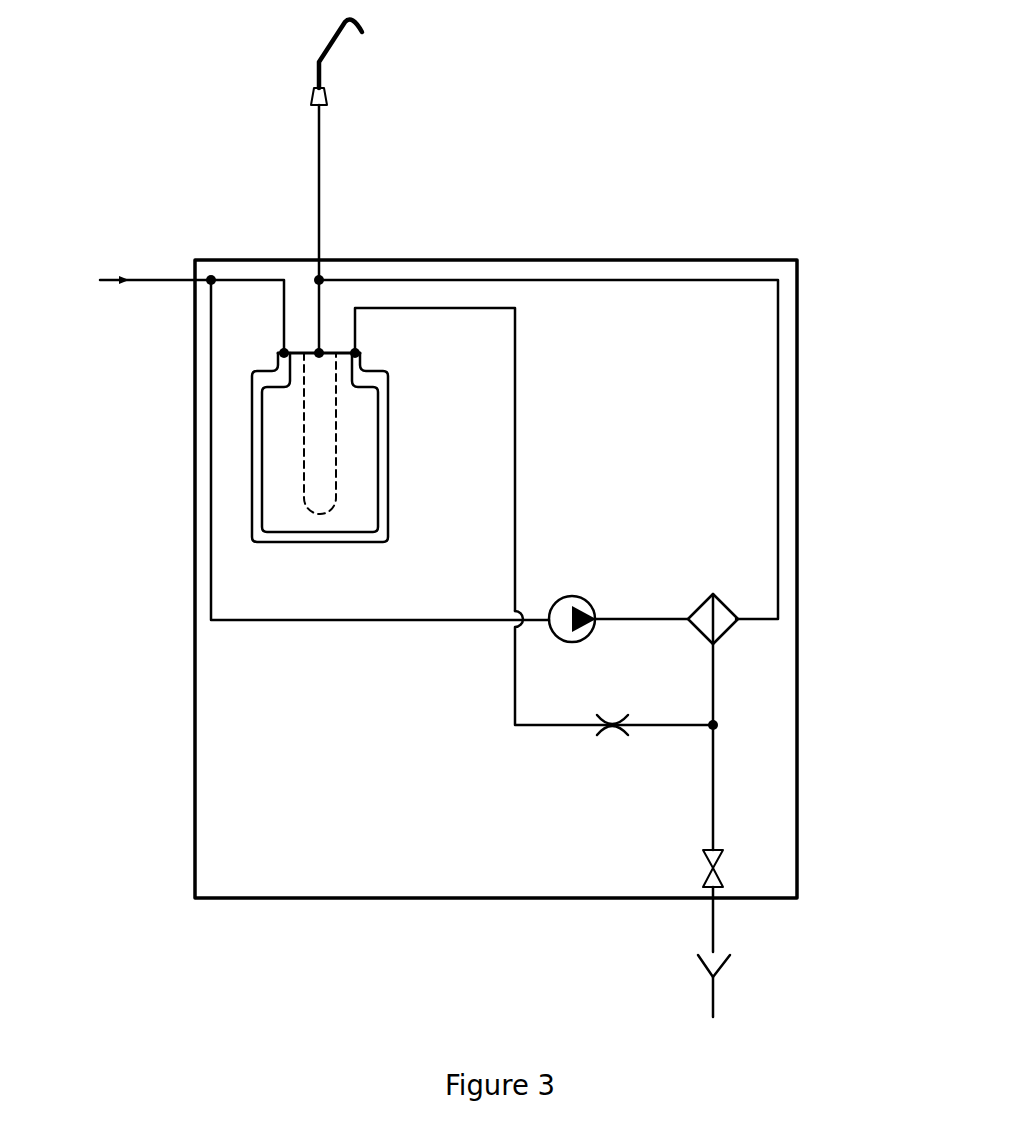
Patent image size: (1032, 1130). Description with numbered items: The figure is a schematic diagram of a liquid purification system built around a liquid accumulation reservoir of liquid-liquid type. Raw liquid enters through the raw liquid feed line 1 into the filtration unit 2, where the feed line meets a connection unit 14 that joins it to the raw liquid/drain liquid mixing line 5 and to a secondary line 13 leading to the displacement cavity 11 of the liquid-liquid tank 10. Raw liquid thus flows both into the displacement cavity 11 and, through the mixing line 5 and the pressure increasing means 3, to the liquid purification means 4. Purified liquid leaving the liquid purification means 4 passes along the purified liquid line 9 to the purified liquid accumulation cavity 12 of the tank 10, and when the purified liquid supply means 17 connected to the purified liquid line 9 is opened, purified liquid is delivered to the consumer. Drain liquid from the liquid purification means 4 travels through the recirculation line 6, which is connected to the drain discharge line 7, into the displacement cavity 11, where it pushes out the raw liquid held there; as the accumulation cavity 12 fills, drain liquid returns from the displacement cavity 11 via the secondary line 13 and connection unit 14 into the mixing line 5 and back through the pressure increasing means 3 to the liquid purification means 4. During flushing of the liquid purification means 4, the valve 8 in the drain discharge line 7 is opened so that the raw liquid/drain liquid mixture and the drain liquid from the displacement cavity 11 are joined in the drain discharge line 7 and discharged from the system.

The raw liquid feed line 1 is at (154, 207).
The filtration unit 2 is at (496, 579).
The pressure increasing means 3 is at (618, 567).
The liquid purification means 4 is at (719, 568).
The raw liquid/drain liquid mixing line 5 is at (403, 622).
The recirculation line 6 is at (515, 466).
The drain discharge line 7 is at (715, 820).
The valve 8 is at (776, 858).
The purified liquid line 9 is at (433, 278).
The liquid-liquid tank 10 is at (351, 447).
The displacement cavity 11 is at (356, 429).
The purified liquid accumulation cavity 12 is at (377, 444).
The secondary line 13 is at (284, 345).
The connection unit 14 is at (178, 209).
The purified liquid supply means 17 is at (391, 94).